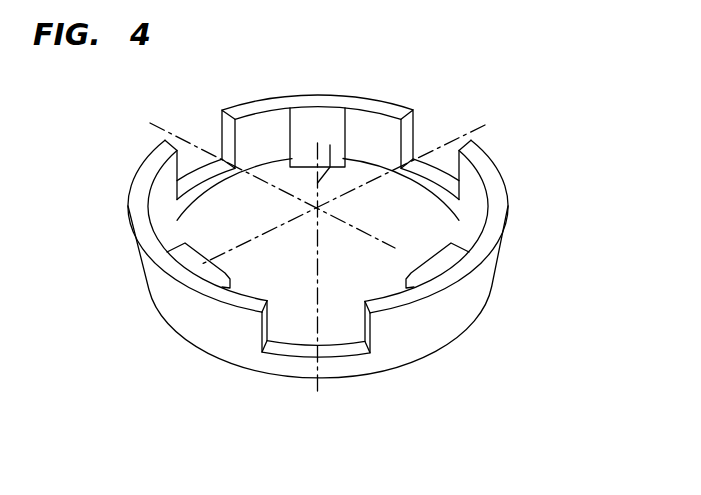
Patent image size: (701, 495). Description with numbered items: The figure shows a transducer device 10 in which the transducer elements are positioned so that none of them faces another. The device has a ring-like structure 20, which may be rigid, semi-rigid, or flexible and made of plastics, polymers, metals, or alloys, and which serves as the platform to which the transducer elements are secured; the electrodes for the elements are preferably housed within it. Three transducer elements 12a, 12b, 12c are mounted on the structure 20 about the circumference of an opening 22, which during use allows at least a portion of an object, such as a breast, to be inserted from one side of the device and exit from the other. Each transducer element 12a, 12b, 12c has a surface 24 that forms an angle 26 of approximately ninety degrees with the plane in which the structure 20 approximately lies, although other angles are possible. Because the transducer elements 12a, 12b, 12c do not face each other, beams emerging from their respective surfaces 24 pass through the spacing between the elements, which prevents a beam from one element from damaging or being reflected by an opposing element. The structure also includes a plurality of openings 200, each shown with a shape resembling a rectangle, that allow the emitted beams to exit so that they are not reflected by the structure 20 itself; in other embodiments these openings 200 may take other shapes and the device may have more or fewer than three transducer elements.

The transducer device 10 is at (538, 134).
The structure 20 is at (458, 310).
The opening 22 is at (430, 223).
The openings 200 is at (420, 137).
The transducer element 12a is at (335, 125).
The surface 24 is at (302, 132).
The angle 26 is at (247, 128).
The transducer element 12b is at (226, 275).
The transducer element 12c is at (407, 277).